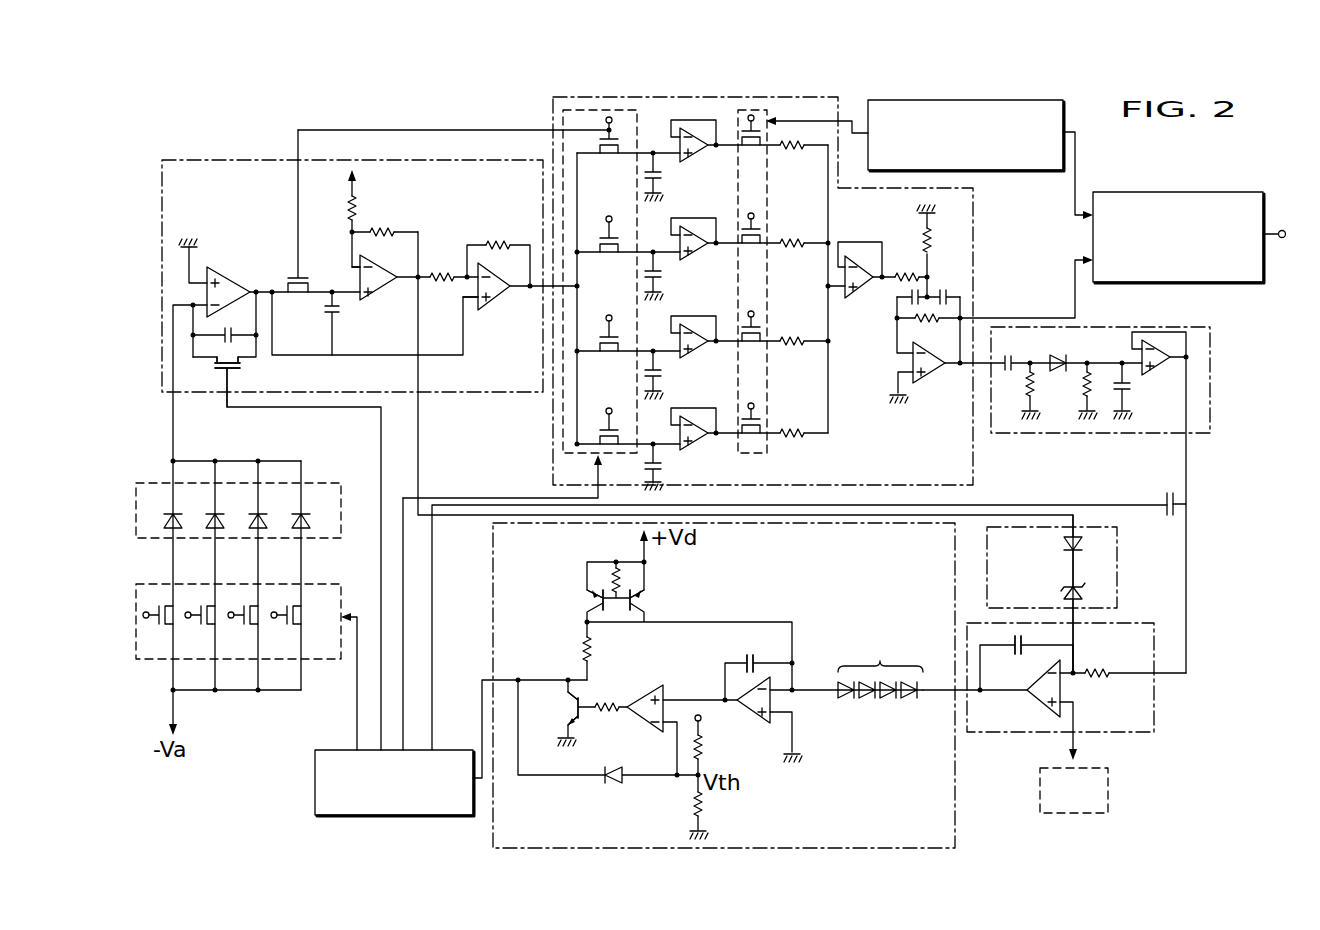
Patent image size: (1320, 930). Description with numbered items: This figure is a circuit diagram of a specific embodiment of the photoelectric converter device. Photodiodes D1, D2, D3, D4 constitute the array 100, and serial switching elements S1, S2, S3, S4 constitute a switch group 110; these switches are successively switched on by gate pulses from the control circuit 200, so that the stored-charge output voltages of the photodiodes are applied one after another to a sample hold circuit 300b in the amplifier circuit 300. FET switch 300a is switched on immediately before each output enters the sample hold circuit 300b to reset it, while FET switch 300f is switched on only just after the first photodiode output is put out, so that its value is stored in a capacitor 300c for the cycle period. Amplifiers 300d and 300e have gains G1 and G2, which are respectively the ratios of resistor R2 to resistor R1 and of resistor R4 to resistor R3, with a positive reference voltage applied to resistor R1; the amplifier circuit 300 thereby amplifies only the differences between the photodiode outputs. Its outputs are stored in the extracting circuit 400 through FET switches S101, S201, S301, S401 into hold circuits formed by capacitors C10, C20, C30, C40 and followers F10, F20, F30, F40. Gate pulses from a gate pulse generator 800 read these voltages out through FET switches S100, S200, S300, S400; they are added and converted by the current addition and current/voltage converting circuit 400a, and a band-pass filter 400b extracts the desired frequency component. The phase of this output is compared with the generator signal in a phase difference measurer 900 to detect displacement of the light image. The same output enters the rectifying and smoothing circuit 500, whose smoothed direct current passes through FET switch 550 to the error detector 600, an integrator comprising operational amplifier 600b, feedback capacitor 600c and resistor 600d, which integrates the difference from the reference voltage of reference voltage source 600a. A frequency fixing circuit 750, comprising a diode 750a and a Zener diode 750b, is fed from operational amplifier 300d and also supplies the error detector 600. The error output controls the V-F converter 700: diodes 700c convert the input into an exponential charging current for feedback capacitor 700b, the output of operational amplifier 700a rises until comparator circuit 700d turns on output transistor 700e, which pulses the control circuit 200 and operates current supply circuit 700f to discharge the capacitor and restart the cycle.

The photodiode array 100 is at (333, 483).
The switch group 110 is at (341, 584).
The control circuit 200 is at (315, 781).
The amplifier circuit 300 is at (220, 160).
The FET switch 300a is at (242, 368).
The sample hold circuit 300b is at (224, 268).
The capacitor 300c is at (328, 312).
The operational amplifier 300d is at (380, 300).
The amplifier 300e is at (494, 310).
The FET switch 300f is at (288, 280).
The extracting circuit 400 is at (553, 103).
The current addition and current/voltage converting circuit 400a is at (860, 298).
The band-pass filter 400b is at (934, 383).
The rectifying and smoothing circuit 500 is at (1210, 405).
The FET switch 550 is at (1180, 504).
The error detector 600 is at (1154, 706).
The reference voltage source 600a is at (1108, 795).
The operational amplifier 600b is at (1046, 702).
The feedback capacitor 600c is at (1038, 678).
The resistor 600d is at (1100, 670).
The V-F converter 700 is at (724, 685).
The operational amplifier 700a is at (755, 724).
The feedback capacitor 700b is at (749, 656).
The diodes 700c is at (880, 666).
The comparator circuit 700d is at (646, 692).
The output transistor 700e is at (583, 712).
The current supply circuit 700f is at (640, 598).
The frequency fixing circuit 750 is at (1117, 540).
The diode 750a is at (1064, 543).
The Zener diode 750b is at (1066, 592).
The gate pulse generator 800 is at (1020, 170).
The phase difference measurer 900 is at (1240, 282).
The photodiode D1 is at (167, 518).
The photodiode D2 is at (209, 518).
The photodiode D3 is at (252, 518).
The photodiode D4 is at (295, 518).
The switching element S1 is at (160, 624).
The switching element S2 is at (202, 624).
The switching element S3 is at (245, 624).
The switching element S4 is at (288, 624).
The FET switch S101 is at (611, 156).
The FET switch S201 is at (611, 255).
The FET switch S301 is at (611, 354).
The FET switch S401 is at (611, 447).
The FET switch S100 is at (755, 148).
The FET switch S200 is at (755, 246).
The FET switch S300 is at (755, 344).
The FET switch S400 is at (755, 436).
The capacitor C10 is at (662, 174).
The capacitor C20 is at (662, 273).
The capacitor C30 is at (662, 372).
The capacitor C40 is at (662, 465).
The voltage follower F10 is at (700, 159).
The follower F20 is at (700, 257).
The follower F30 is at (700, 355).
The follower F40 is at (700, 447).
The resistor R1 is at (352, 205).
The resistor R2 is at (383, 232).
The resistor R3 is at (440, 277).
The resistor R4 is at (498, 245).
The gain of amplifier 300d G1 is at (358, 268).
The gain of amplifier 300e G2 is at (476, 297).